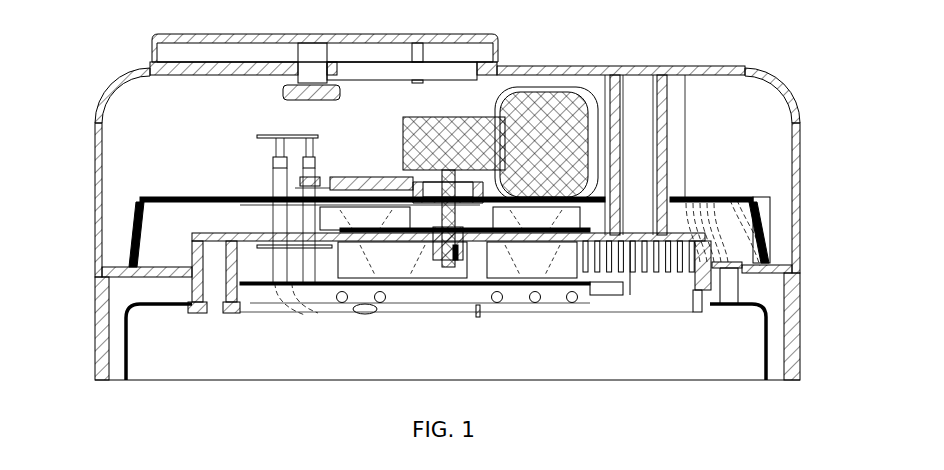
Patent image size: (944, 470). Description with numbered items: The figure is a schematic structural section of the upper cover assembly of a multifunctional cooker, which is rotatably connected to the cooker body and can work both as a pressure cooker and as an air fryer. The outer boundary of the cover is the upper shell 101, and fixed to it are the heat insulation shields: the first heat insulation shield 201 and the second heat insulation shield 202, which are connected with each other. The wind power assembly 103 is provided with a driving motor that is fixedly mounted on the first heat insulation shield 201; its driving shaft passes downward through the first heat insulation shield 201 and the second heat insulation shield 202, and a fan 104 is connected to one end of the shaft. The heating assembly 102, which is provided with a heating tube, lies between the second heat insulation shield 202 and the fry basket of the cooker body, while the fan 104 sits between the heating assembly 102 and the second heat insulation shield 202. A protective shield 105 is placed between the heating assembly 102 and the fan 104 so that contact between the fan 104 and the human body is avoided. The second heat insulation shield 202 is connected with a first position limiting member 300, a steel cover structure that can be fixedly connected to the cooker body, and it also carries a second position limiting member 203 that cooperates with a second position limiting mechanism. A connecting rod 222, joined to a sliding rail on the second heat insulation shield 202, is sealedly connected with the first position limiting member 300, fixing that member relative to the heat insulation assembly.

The upper shell 101 is at (118, 82).
The heating assembly 102 is at (310, 317).
The wind power assembly 103 is at (560, 100).
The fan 104 is at (555, 267).
The protective shield 105 is at (590, 283).
The first heat insulation shield 201 is at (133, 222).
The second heat insulation shield 202 is at (150, 268).
The second position limiting member 203 is at (187, 280).
The connecting rod 222 is at (733, 292).
The first position limiting member 300 is at (127, 320).